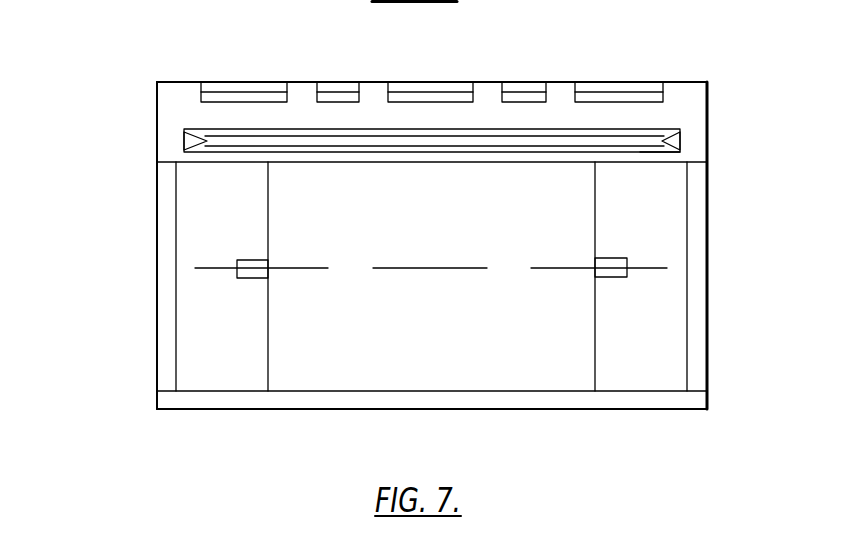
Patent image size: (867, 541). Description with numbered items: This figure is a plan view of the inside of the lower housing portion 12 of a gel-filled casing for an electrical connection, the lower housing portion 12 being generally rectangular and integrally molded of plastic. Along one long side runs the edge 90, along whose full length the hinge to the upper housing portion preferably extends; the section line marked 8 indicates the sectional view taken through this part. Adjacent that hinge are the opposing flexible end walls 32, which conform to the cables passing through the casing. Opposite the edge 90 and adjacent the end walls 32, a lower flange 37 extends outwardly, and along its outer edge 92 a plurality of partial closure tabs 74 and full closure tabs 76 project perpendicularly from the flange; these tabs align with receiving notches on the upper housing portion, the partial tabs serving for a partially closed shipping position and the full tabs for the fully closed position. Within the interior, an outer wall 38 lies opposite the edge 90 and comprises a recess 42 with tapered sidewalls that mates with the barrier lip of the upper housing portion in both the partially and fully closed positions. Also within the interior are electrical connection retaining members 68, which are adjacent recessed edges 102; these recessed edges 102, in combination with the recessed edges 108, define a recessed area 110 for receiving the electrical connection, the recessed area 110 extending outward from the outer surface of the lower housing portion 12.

The lower housing portion 12 is at (704, 51).
The outer edge 92 is at (182, 82).
The lower flange 37 is at (157, 132).
The full closure tabs 76 is at (260, 74).
The partial closure tabs 74 is at (337, 74).
The recess 42 is at (665, 126).
The outer wall 38 is at (652, 164).
The flexible end walls 32 is at (157, 270).
The recessed edges 108 is at (560, 162).
The recessed edges 102 is at (268, 367).
The electrical connection retaining members 68 is at (247, 278).
The edge 90 is at (543, 409).
The recessed area 110 is at (326, 363).
The section line 8- 8 is at (47, 232).